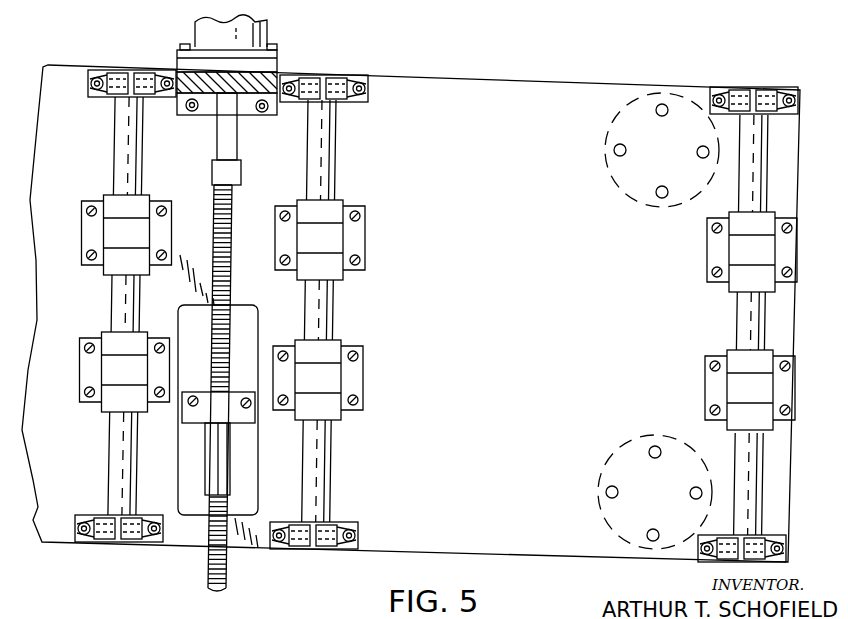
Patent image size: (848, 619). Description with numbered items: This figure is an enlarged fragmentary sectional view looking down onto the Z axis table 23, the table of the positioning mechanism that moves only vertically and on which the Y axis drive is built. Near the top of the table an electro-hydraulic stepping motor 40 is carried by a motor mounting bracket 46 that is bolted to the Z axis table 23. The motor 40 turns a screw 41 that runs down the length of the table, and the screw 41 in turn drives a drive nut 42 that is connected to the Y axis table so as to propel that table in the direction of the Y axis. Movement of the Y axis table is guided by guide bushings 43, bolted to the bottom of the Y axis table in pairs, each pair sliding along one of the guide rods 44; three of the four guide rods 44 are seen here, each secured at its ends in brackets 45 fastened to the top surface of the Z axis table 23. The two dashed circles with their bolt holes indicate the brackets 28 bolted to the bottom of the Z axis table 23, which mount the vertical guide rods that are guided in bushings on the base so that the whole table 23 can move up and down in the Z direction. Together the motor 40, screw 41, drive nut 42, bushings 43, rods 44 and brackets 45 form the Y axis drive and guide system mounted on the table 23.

The Z axis table 23 is at (512, 92).
The brackets 28 is at (652, 97).
The electro-hydraulic stepping motor 40 is at (258, 35).
The screw 41 is at (233, 291).
The drive nut 42 is at (226, 458).
The guide bushings 43 is at (150, 200).
The guide rods 44 is at (113, 303).
The brackets 45 is at (97, 70).
The motor mounting bracket 46 is at (277, 78).